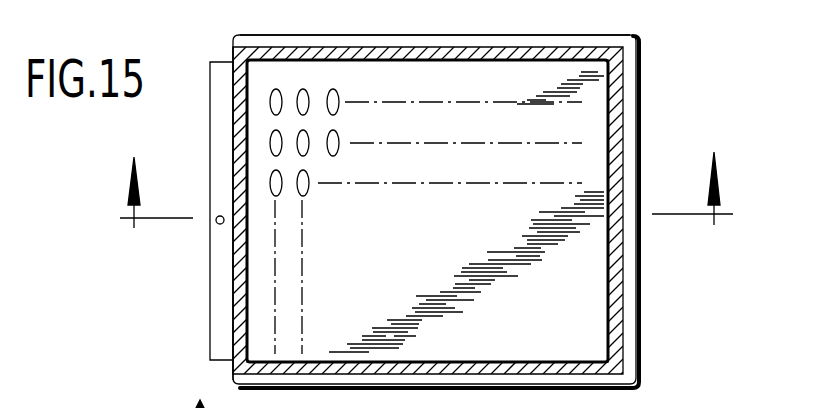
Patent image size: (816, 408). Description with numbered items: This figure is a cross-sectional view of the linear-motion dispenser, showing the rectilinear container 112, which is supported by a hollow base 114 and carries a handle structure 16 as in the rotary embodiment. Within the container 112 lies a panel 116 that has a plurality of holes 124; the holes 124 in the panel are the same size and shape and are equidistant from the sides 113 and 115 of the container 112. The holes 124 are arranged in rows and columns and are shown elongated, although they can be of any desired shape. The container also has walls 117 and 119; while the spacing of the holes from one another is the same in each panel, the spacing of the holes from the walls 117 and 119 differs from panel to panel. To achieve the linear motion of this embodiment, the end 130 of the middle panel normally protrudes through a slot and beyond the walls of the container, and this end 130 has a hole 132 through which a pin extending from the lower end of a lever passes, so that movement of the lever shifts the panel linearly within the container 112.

The handle structure 16 is at (428, 280).
The rectilinear container 112 is at (620, 93).
The side of the container 113 is at (433, 47).
The hollow base 114 is at (640, 340).
The side of the container 115 is at (523, 362).
The panel 116 is at (384, 277).
The wall 117 is at (233, 283).
The wall 119 is at (620, 277).
The holes 124 is at (333, 89).
The end of the middle panel 130 is at (210, 337).
The hole 132 is at (217, 224).